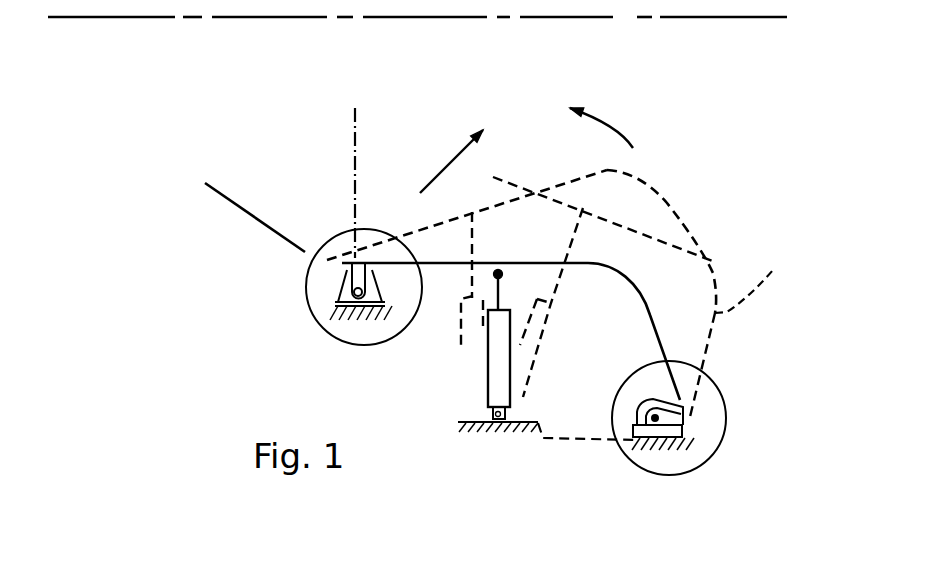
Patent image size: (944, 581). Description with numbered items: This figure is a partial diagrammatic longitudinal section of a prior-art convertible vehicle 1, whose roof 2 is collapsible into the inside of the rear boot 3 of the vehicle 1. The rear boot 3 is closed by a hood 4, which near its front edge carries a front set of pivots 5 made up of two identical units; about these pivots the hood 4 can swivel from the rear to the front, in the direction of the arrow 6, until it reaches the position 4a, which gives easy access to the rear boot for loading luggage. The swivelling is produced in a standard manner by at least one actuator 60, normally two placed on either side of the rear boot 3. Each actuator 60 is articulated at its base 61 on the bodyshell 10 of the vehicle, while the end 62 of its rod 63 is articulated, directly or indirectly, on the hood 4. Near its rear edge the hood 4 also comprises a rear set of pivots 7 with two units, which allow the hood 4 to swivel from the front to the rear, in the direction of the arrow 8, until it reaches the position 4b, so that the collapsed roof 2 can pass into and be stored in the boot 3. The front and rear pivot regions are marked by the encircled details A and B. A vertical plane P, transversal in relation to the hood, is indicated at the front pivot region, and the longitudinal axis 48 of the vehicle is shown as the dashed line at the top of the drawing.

The convertible vehicle 1 is at (747, 322).
The roof 2 is at (242, 200).
The rear boot 3 is at (608, 330).
The hood 4 is at (643, 288).
The position of the hood 4a is at (645, 165).
The position of the hood 4b is at (773, 270).
The front set of pivots 5 is at (343, 272).
The arrow 6 is at (613, 123).
The rear set of pivots 7 is at (682, 433).
The arrow 8 is at (440, 167).
The bodyshell 10 is at (542, 423).
The longitudinal axis 48 is at (705, 17).
The actuator 60 is at (485, 355).
The base 61 is at (493, 414).
The end 62 is at (498, 274).
The rod 63 is at (494, 290).
The detail A (body-side bearing) A is at (333, 338).
The detail B (cover-side bearing) B is at (727, 412).
The vertical plane P is at (357, 128).